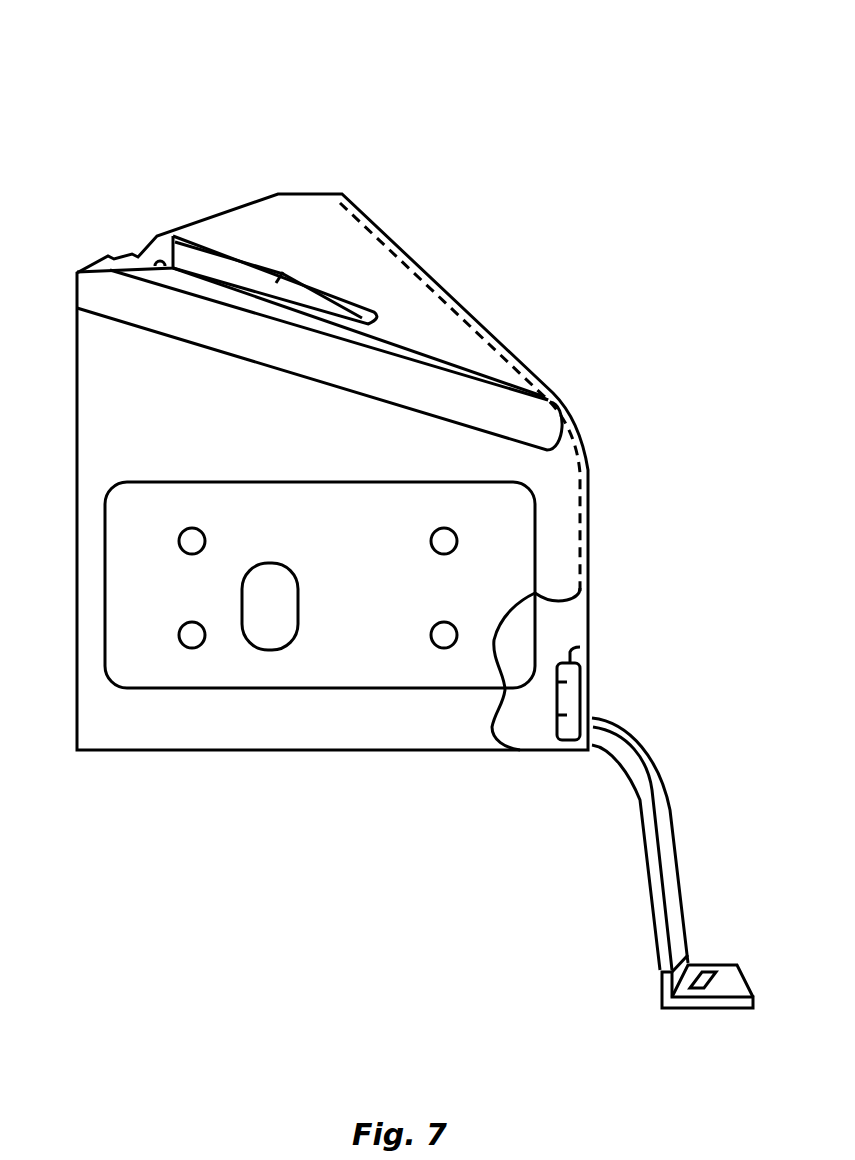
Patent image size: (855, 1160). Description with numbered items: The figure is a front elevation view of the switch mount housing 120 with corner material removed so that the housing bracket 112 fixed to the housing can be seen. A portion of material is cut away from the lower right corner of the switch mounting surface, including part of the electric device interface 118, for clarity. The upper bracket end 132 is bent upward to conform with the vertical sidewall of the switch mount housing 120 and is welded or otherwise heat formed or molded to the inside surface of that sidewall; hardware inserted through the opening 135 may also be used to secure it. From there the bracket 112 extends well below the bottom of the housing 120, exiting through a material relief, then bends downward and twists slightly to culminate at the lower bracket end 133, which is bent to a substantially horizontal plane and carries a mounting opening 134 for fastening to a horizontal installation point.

The switch mount housing 120 is at (155, 183).
The electric device interface 118 is at (291, 466).
The bracket end 132 is at (557, 705).
The opening 135 is at (583, 700).
The housing bracket 112 is at (675, 845).
The bracket end 133 is at (710, 1003).
The mounting opening 134 is at (702, 980).